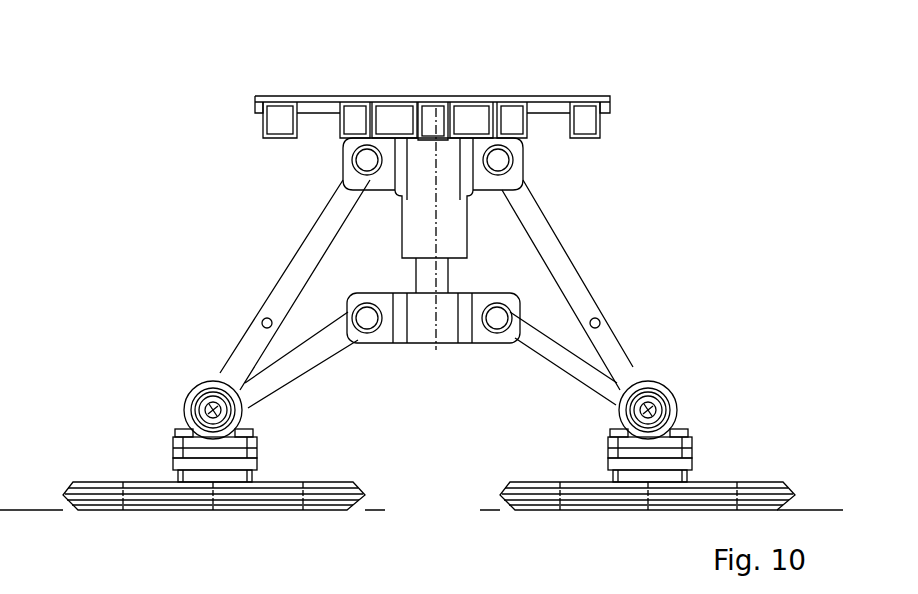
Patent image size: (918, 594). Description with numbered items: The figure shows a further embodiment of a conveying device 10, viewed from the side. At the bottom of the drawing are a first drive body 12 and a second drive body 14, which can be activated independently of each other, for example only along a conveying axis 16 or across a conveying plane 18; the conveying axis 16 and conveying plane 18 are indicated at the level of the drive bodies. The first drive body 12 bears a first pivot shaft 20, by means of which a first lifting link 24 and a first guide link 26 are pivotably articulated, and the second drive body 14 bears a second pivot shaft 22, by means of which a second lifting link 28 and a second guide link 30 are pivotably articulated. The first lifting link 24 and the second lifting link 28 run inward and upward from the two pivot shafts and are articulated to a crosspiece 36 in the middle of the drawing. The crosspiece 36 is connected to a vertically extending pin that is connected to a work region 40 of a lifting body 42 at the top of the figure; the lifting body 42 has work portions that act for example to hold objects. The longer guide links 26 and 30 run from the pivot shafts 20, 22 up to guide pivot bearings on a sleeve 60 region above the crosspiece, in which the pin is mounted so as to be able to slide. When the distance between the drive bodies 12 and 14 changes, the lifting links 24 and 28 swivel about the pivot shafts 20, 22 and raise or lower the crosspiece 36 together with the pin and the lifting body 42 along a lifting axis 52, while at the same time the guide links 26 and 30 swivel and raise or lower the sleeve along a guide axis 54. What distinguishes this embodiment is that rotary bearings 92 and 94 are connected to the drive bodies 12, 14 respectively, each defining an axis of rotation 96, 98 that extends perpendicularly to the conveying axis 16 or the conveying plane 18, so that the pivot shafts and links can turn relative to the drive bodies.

The conveying device 10 is at (643, 56).
The first drive body 12 is at (270, 500).
The second drive body 14 is at (603, 510).
The conveying axis 16 is at (53, 512).
The conveying plane 18 is at (818, 506).
The first pivot shaft 20 is at (208, 405).
The second pivot shaft 22 is at (657, 400).
The first lifting link 24 is at (315, 350).
The first guide link 26 is at (300, 263).
The second lifting link 28 is at (562, 360).
The second guide link 30 is at (577, 273).
The crosspiece 36 is at (448, 345).
The work region 40 is at (482, 107).
The lifting body 42 is at (393, 77).
The lifting axis 52 is at (438, 287).
The guide axis 54 is at (436, 70).
The actuator column 60 is at (385, 242).
The rotary bearing 92 is at (285, 449).
The rotary bearing 94 is at (717, 441).
The axis of rotation 96 is at (197, 457).
The axis of rotation 98 is at (607, 448).